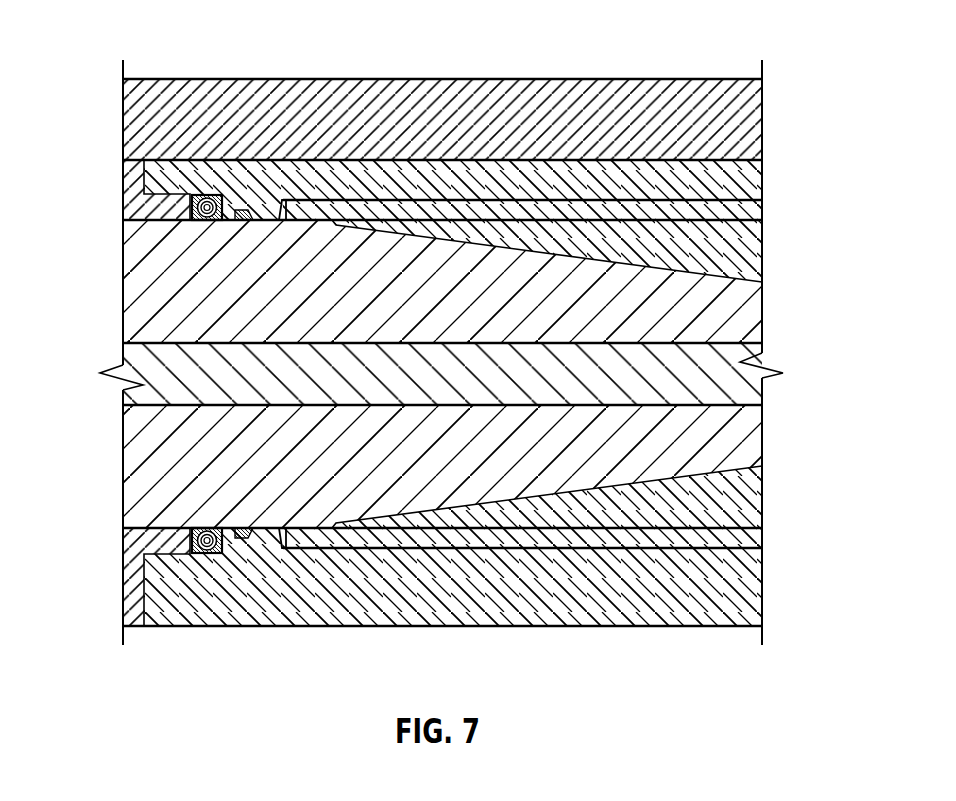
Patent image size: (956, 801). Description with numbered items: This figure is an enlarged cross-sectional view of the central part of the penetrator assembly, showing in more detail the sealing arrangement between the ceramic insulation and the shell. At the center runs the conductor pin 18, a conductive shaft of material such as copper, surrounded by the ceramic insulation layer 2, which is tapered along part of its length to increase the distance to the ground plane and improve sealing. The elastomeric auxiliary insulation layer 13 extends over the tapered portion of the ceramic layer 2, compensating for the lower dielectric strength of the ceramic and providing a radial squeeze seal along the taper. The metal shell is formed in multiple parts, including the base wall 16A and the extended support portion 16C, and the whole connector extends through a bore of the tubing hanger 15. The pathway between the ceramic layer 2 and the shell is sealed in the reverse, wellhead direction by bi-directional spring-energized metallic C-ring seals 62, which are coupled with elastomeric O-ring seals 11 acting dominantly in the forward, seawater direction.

The ceramic insulation layer 2 is at (748, 312).
The elastomeric O-ring seal 11 is at (247, 208).
The elastomeric auxiliary insulation layer 13 is at (742, 250).
The tubing hanger 15 is at (308, 90).
The base wall 16A is at (132, 573).
The extended support portion 16C is at (745, 182).
The conductor pin 18 is at (768, 364).
The metallic C-ring seal 62 is at (210, 553).